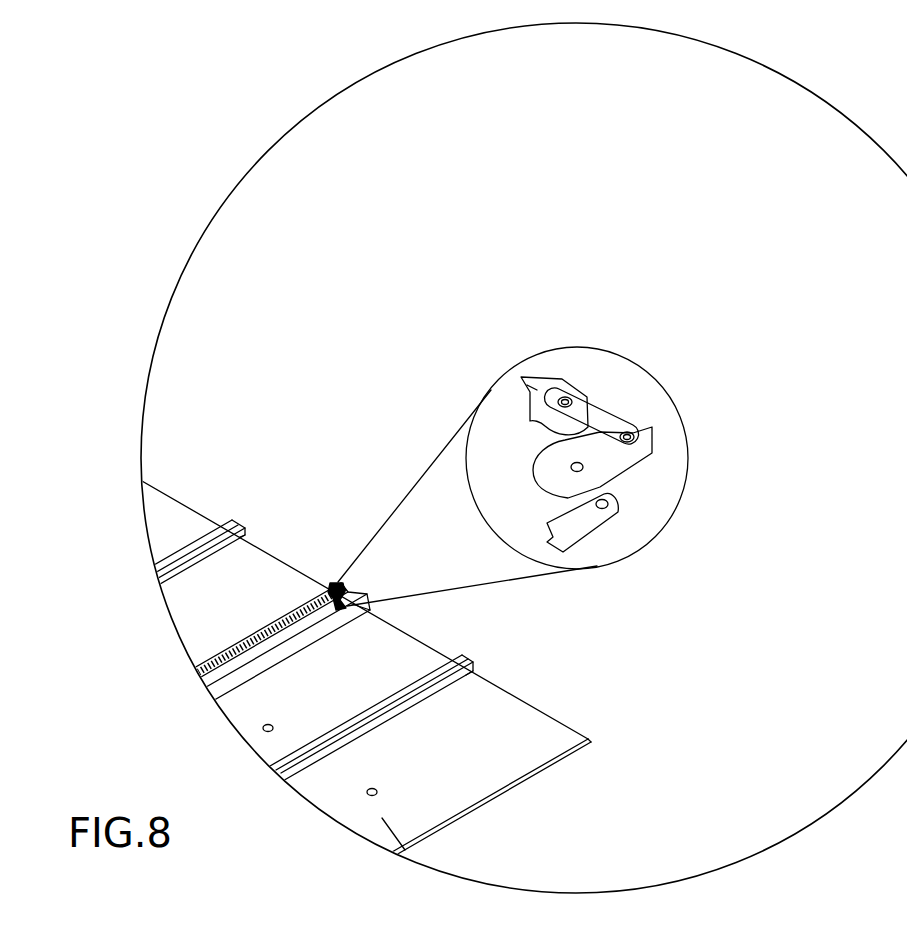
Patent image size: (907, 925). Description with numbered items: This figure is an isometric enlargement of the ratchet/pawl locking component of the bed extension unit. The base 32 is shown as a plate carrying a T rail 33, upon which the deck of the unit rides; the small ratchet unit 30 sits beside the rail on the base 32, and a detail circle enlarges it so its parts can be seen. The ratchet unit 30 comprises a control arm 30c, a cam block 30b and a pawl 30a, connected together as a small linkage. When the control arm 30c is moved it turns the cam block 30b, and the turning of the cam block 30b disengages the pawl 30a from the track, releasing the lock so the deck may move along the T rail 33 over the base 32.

The ratchet unit 30 is at (626, 447).
The pawl 30a is at (521, 379).
The cam block 30b is at (640, 455).
The control arm 30c is at (618, 529).
The base 32 is at (393, 855).
The T rail 33 is at (421, 689).